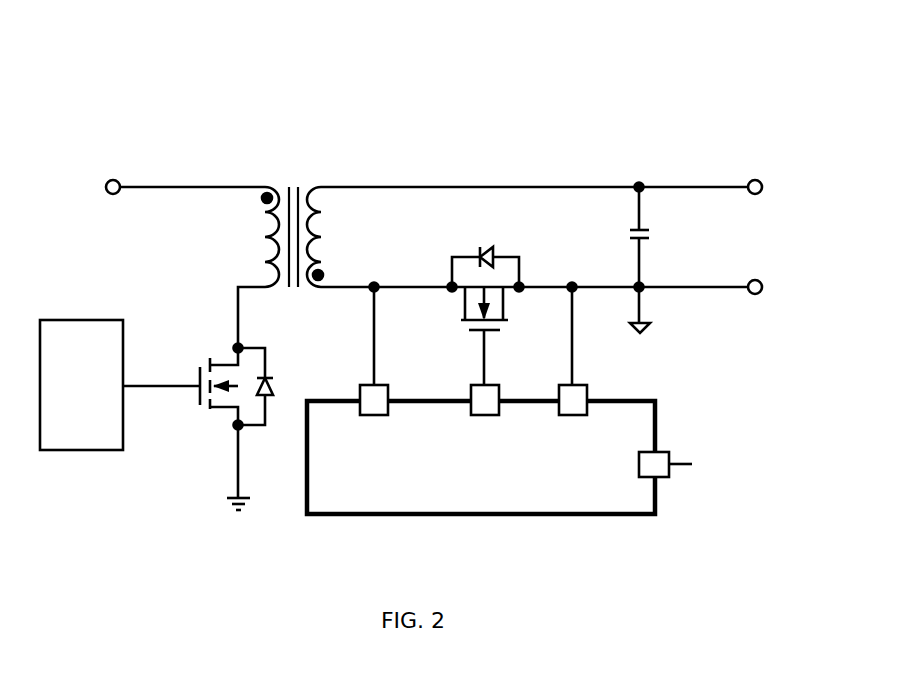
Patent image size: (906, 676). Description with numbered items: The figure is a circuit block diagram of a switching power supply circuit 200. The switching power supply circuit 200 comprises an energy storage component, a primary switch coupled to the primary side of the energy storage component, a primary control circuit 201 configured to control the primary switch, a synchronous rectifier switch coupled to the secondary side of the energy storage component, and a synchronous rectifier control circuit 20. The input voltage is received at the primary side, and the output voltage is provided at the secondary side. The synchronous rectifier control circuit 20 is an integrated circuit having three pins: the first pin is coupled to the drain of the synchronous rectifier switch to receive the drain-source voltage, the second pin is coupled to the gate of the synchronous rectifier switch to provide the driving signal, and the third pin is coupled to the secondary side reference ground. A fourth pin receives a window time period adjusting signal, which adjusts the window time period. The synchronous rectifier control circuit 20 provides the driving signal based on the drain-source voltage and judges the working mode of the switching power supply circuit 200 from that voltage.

The switching power supply circuit 200 is at (723, 95).
The primary control circuit 201 is at (66, 398).
The synchronous rectifier control circuit 20 is at (497, 496).